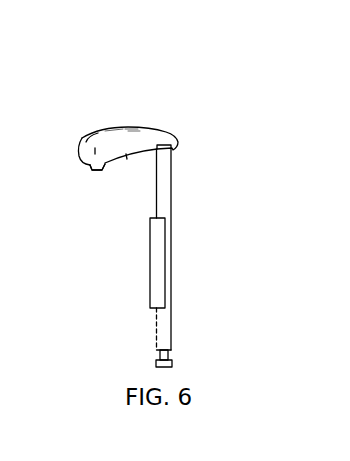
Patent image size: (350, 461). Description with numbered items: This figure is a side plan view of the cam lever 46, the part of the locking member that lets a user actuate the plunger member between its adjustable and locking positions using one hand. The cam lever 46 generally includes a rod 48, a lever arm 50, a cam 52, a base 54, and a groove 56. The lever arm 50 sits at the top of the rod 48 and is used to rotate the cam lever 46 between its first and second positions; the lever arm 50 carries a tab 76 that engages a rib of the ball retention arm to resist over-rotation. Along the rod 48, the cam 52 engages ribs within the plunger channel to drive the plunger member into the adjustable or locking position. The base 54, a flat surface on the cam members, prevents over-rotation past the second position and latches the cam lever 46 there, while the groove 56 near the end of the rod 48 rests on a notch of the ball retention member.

The cam lever 46 is at (208, 118).
The lever arm 50 is at (122, 132).
The tab 76 is at (99, 172).
The cam 52 is at (150, 251).
The base 54 is at (172, 253).
The rod 48 is at (168, 329).
The groove 56 is at (171, 355).